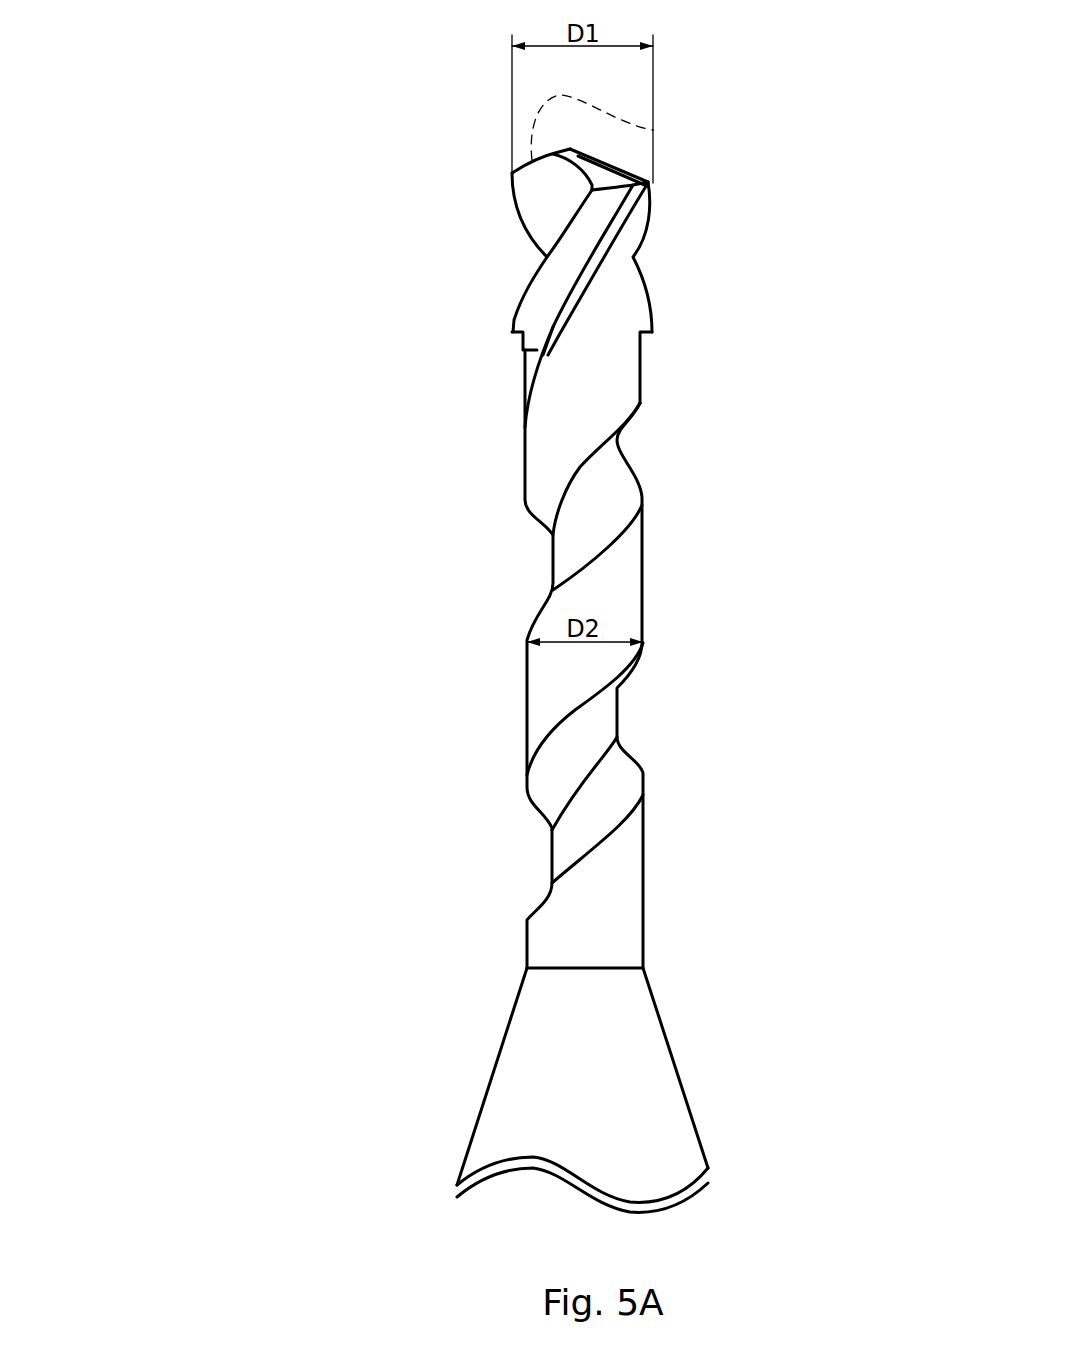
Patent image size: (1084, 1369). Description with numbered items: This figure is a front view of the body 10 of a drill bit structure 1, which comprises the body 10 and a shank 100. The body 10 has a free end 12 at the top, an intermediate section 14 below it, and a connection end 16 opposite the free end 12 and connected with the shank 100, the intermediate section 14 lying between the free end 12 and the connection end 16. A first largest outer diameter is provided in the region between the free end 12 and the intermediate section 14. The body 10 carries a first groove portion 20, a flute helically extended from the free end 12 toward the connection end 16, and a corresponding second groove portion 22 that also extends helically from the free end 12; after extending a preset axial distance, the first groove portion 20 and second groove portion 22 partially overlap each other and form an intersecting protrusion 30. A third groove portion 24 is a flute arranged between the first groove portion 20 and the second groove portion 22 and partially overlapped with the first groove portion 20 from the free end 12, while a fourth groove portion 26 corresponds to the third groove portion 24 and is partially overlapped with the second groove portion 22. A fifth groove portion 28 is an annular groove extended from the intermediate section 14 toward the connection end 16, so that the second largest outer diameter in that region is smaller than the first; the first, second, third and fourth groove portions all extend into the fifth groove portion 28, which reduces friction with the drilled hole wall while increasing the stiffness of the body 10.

The drill bit structure 1 is at (246, 74).
The body 10 is at (290, 958).
The free end 12 is at (577, 148).
The intermediate section 14 is at (547, 335).
The connection end 16 is at (580, 968).
The first groove portion 20 is at (542, 200).
The second groove portion 22 is at (598, 333).
The third groove portion 24 is at (560, 263).
The fourth groove portion 26 is at (653, 130).
The fifth groove portion 28 is at (510, 966).
The intersecting protrusion 30 is at (587, 777).
The shank 100 is at (558, 1112).